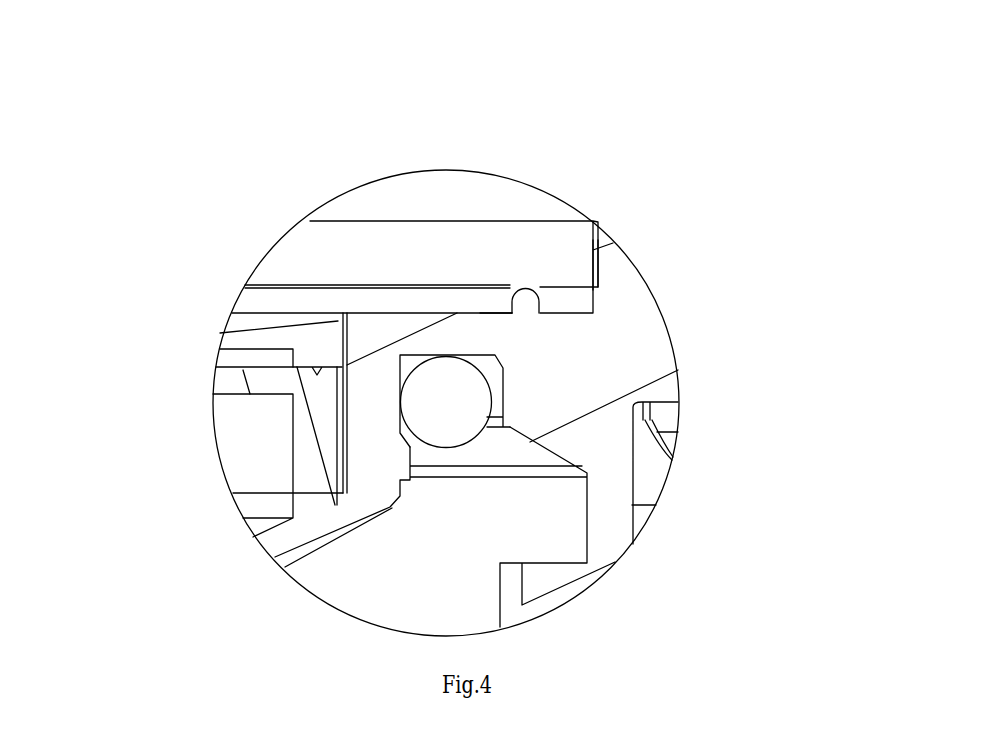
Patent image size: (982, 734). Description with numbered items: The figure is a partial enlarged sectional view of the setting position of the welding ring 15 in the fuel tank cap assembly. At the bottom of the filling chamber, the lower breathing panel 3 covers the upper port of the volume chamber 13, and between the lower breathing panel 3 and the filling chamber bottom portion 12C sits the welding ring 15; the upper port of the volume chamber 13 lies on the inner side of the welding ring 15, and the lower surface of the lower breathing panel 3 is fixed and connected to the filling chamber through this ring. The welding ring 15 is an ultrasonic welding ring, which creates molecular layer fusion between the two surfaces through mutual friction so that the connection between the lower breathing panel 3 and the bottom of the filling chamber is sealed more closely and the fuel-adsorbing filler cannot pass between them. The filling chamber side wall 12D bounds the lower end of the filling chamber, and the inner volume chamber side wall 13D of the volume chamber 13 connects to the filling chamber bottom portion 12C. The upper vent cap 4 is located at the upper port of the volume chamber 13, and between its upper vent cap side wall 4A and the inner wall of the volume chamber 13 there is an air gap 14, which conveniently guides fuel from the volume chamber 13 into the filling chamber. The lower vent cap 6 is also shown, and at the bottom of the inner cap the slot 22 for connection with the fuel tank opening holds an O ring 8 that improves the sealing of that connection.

The lower breathing panel 3 is at (428, 252).
The upper vent cap 4 is at (268, 336).
The upper vent cap side wall 4A is at (342, 318).
The lower vent cap 6 is at (273, 382).
The O ring 8 is at (447, 403).
The filling chamber bottom portion 12C is at (483, 313).
The filling chamber side wall 12D is at (597, 263).
The volume chamber 13 is at (570, 390).
The inner volume chamber side wall 13D is at (347, 399).
The air gap 14 is at (342, 397).
The welding ring 15 is at (525, 313).
The slot 22 is at (460, 555).